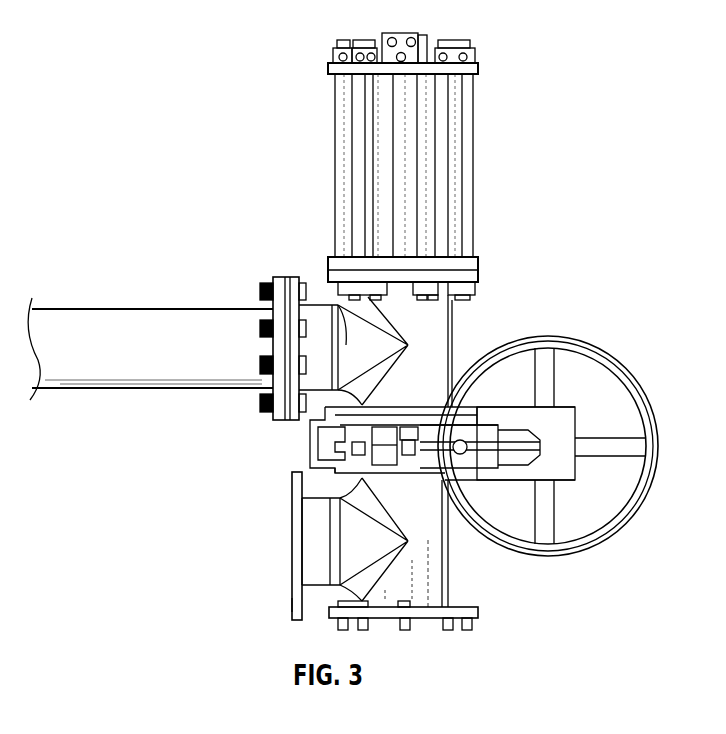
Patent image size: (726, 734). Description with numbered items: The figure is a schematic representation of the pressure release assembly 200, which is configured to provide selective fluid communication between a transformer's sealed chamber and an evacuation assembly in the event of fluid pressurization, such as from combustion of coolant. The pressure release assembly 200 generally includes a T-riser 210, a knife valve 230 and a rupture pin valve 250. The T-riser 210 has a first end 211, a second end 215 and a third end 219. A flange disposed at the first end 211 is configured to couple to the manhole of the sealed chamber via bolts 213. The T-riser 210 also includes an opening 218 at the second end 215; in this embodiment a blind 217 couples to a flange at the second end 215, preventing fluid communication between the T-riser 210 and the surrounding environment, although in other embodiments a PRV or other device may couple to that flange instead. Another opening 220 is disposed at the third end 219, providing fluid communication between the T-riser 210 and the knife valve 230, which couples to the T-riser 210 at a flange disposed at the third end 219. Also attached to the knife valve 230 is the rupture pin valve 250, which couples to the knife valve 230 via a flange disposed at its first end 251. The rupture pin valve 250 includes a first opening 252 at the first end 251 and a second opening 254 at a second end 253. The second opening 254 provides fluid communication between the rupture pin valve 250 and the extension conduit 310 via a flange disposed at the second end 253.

The pressure release assembly 200 is at (142, 175).
The T-riser 210 is at (432, 548).
The first end 211 is at (480, 612).
The bolts 213 is at (470, 626).
The second end 215 is at (292, 598).
The blind 217 is at (297, 570).
The opening 218 is at (315, 531).
The third end 219 is at (448, 407).
The opening 220 is at (397, 468).
The knife valve 230 is at (560, 448).
The rupture pin valve 250 is at (480, 266).
The first end 251 is at (320, 432).
The first opening 252 is at (400, 425).
The second end 253 is at (287, 299).
The second opening 254 is at (333, 307).
The extension conduit 310 is at (105, 318).